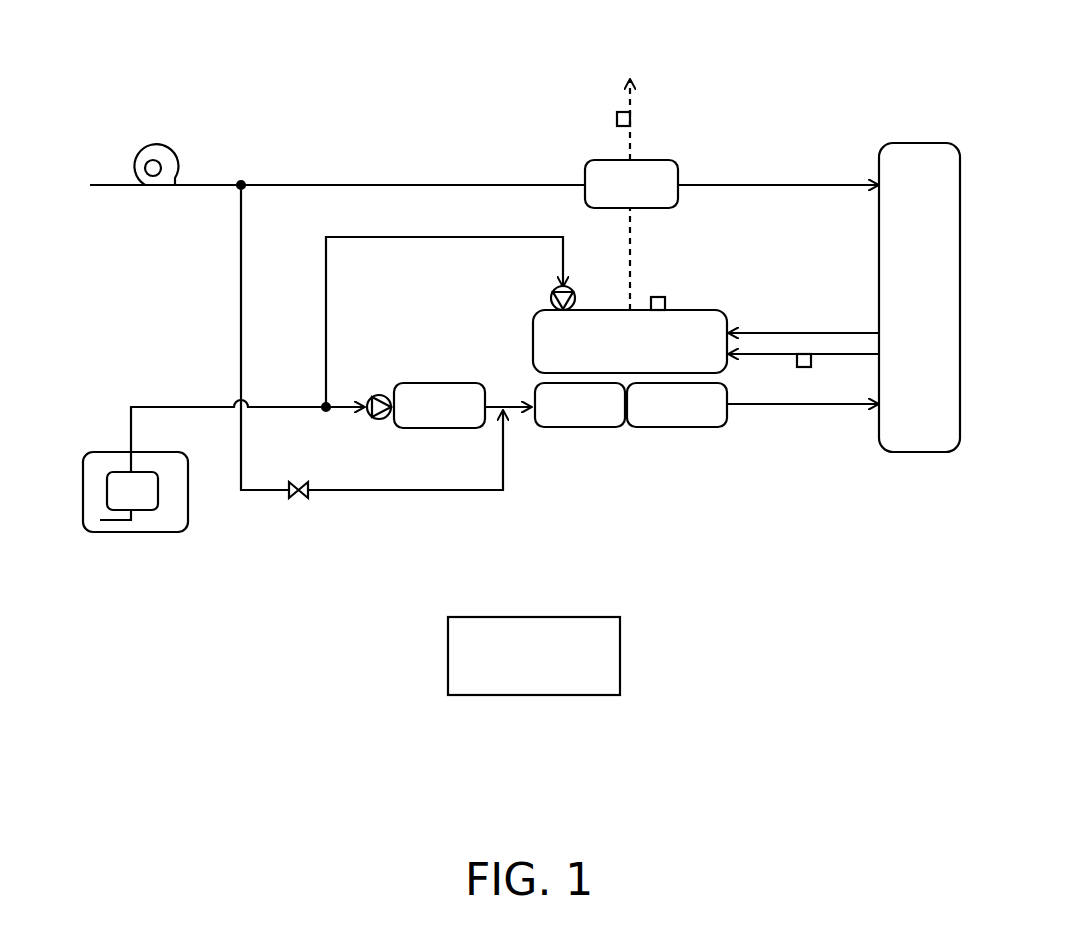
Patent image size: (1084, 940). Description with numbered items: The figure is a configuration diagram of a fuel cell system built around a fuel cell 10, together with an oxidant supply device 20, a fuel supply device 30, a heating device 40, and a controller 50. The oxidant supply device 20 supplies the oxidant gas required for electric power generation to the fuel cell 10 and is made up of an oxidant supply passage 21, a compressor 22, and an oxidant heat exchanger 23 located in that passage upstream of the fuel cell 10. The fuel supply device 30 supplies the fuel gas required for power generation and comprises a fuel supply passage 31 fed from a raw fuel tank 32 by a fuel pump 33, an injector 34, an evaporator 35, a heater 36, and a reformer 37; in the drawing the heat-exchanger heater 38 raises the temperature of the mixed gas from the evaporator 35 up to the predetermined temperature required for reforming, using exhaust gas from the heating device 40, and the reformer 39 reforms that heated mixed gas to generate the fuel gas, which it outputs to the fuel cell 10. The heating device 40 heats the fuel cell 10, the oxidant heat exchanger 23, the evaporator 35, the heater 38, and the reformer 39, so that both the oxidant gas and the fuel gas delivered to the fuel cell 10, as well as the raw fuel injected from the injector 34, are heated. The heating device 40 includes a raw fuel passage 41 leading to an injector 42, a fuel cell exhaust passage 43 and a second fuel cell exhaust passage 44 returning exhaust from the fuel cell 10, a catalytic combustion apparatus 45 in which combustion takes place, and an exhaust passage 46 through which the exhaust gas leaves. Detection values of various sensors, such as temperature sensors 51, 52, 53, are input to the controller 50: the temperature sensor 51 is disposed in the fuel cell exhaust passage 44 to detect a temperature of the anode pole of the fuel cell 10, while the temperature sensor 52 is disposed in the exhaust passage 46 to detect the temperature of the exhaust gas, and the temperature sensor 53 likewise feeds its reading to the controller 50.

The fuel cell 10 is at (928, 143).
The oxidant supply device 20 is at (165, 90).
The oxidant supply passage 21 is at (306, 184).
The compressor 22 is at (176, 158).
The oxidant heat exchanger 23 is at (656, 160).
The fuel supply device 30 is at (110, 340).
The fuel supply passage 31 is at (191, 406).
The raw fuel tank 32 is at (106, 452).
The fuel pump 33 is at (148, 472).
The injector 34 is at (380, 395).
The evaporator 35 is at (462, 383).
The heater 36 is at (242, 365).
The reformer 37 is at (298, 482).
The heater 38 is at (583, 428).
The reformer 39 is at (676, 428).
The heating device 40 is at (777, 253).
The raw fuel passage 41 is at (327, 282).
The injector 42 is at (573, 290).
The fuel cell exhaust passage 43 is at (800, 333).
The fuel cell exhaust passage 44 is at (778, 355).
The catalytic combustion apparatus 45 is at (700, 310).
The exhaust passage 46 is at (633, 226).
The controller 50 is at (590, 617).
The temperature sensor 51 is at (812, 365).
The temperature sensor 52 is at (617, 120).
The temperature sensor 53 is at (658, 297).